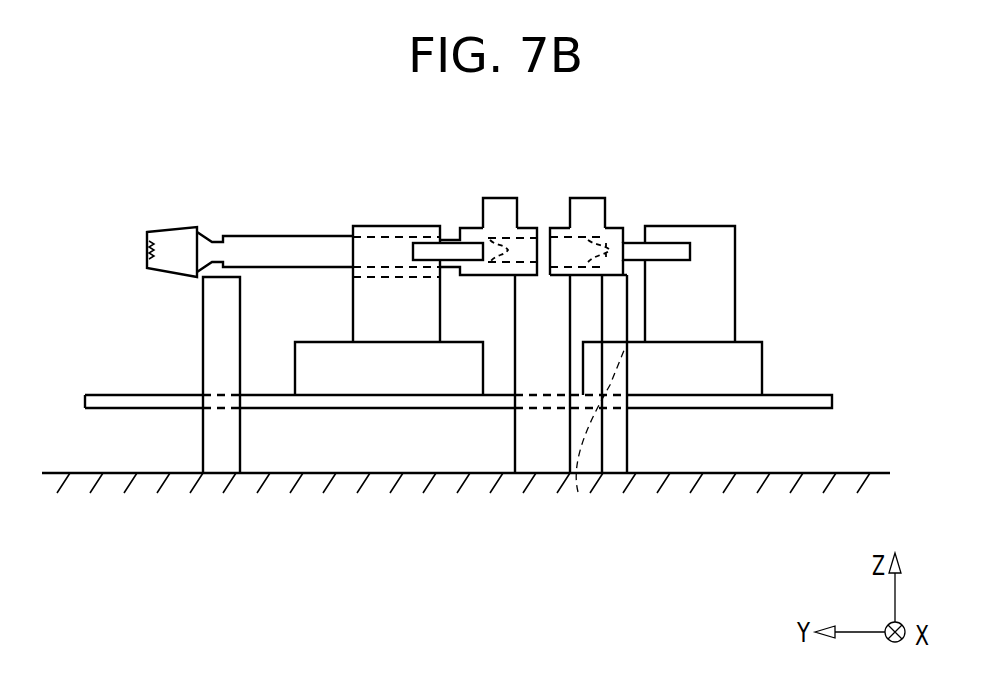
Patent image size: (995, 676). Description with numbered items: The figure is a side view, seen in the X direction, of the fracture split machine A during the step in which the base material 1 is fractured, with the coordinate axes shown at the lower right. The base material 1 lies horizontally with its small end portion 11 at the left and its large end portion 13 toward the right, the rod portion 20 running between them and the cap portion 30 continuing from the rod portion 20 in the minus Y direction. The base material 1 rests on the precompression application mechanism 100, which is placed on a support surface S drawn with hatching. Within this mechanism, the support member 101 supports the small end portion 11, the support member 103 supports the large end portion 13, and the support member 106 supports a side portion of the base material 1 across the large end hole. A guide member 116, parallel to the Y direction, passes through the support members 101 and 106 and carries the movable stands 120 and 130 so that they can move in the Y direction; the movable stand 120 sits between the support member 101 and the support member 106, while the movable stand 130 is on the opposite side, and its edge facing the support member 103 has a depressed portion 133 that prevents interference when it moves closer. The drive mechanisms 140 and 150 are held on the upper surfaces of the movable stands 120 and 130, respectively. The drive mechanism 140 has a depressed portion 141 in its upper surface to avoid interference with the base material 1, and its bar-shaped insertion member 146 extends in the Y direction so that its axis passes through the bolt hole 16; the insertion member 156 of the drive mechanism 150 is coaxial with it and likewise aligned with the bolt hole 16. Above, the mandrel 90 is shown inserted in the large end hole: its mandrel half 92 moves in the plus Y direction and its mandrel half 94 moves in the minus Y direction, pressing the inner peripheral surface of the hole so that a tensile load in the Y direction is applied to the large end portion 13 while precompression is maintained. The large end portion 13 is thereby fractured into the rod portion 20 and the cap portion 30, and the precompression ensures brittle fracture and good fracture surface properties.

The base material 1 is at (224, 210).
The small end portion 11 is at (147, 248).
The large end portion 13 is at (605, 248).
The bolt hole 16 is at (482, 215).
The rod portion 20 is at (243, 232).
The cap portion 30 is at (592, 235).
The mandrel 90 is at (544, 167).
The mandrel half 92 is at (508, 198).
The mandrel half 94 is at (581, 198).
The precompression application mechanism 100 is at (522, 409).
The support member 101 is at (220, 295).
The support member 103 is at (627, 436).
The support member 106 is at (525, 438).
The guide member 116 is at (121, 400).
The movable stand 120 is at (320, 358).
The movable stand 130 is at (742, 358).
The depressed portion 133 is at (588, 446).
The drive mechanism 140 is at (357, 228).
The depressed portion 141 is at (398, 277).
The insertion member 146 is at (428, 248).
The drive mechanism 150 is at (727, 235).
The insertion member 156 is at (686, 243).
The fracture split machine A is at (835, 193).
The support surface S is at (63, 472).